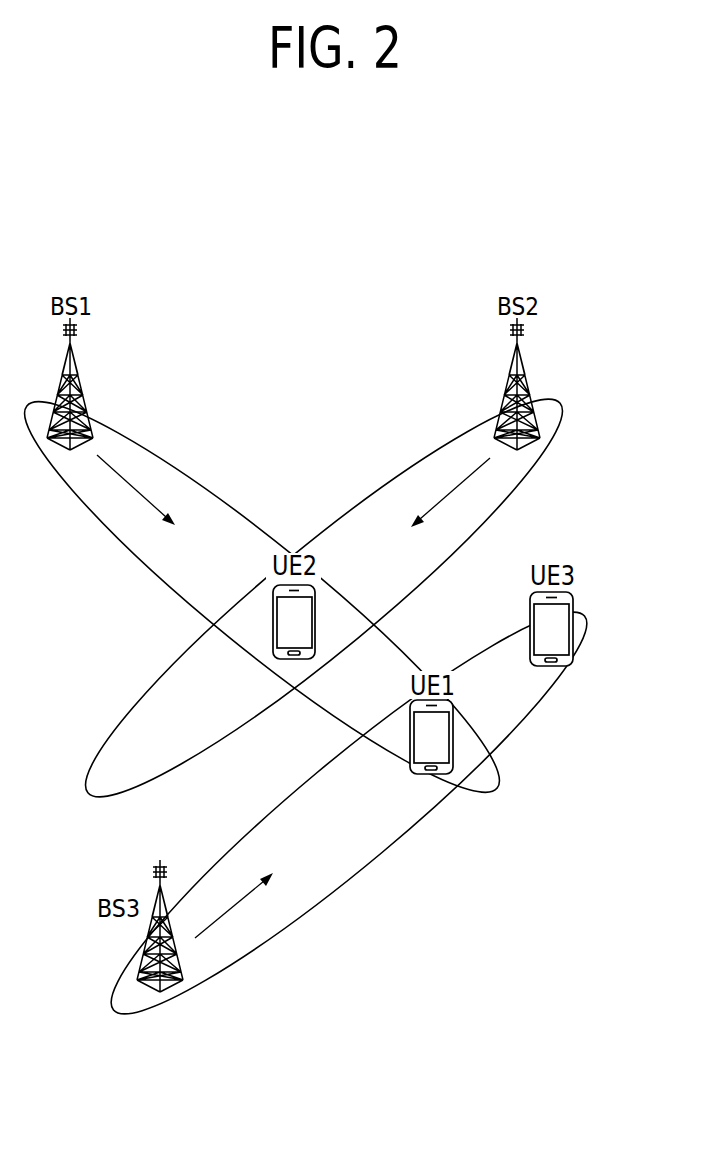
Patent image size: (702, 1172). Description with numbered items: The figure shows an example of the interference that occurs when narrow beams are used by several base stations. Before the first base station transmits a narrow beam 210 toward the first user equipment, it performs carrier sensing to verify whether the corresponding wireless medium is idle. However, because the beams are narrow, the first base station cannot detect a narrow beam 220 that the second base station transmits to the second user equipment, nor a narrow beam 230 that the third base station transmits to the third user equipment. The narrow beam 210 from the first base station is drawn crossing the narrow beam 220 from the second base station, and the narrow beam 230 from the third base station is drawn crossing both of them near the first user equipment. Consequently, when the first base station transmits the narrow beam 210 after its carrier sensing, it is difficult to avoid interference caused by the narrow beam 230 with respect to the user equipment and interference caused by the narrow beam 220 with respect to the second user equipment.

The narrow beam 210 is at (198, 478).
The narrow beam 220 is at (395, 478).
The narrow beam 230 is at (373, 863).